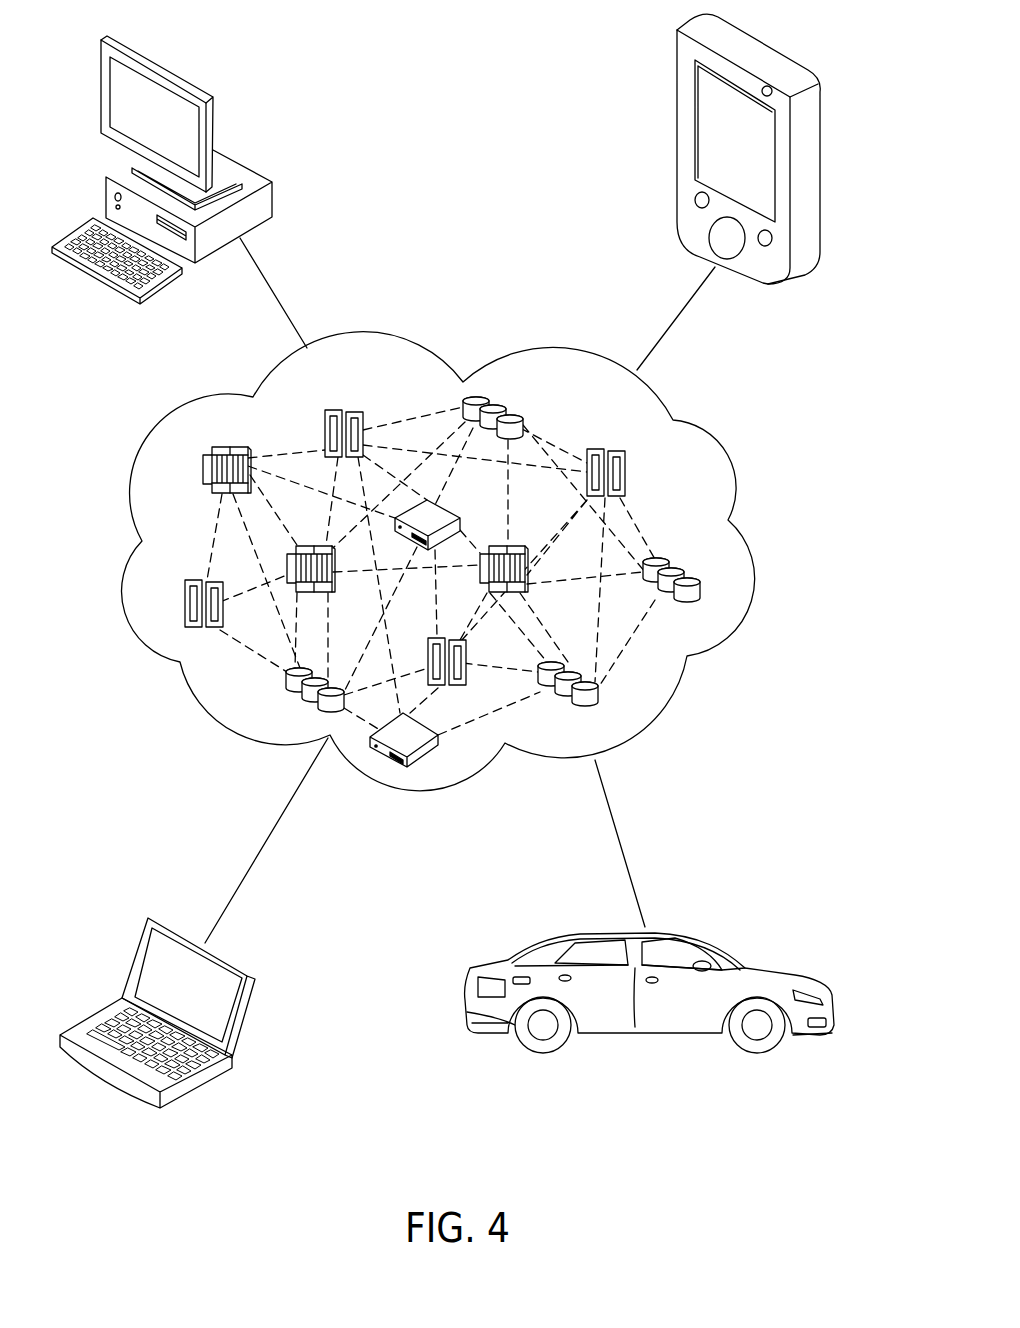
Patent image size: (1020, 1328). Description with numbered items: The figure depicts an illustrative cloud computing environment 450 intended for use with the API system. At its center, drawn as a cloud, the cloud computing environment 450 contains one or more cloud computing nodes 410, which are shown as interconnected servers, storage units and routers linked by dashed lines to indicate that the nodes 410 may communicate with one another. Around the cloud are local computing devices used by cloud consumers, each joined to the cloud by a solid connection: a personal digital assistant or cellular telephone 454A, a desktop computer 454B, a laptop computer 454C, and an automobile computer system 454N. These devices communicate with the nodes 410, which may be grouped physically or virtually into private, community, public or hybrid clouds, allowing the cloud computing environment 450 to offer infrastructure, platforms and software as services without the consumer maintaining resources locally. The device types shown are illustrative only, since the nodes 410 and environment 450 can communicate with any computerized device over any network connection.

The cloud computing nodes 410 is at (685, 495).
The cloud computing environment 450 is at (732, 640).
The personal digital assistant or cellular telephone 454A is at (677, 93).
The desktop computer 454B is at (273, 195).
The laptop computer 454C is at (255, 985).
The automobile computer system 454N is at (827, 995).